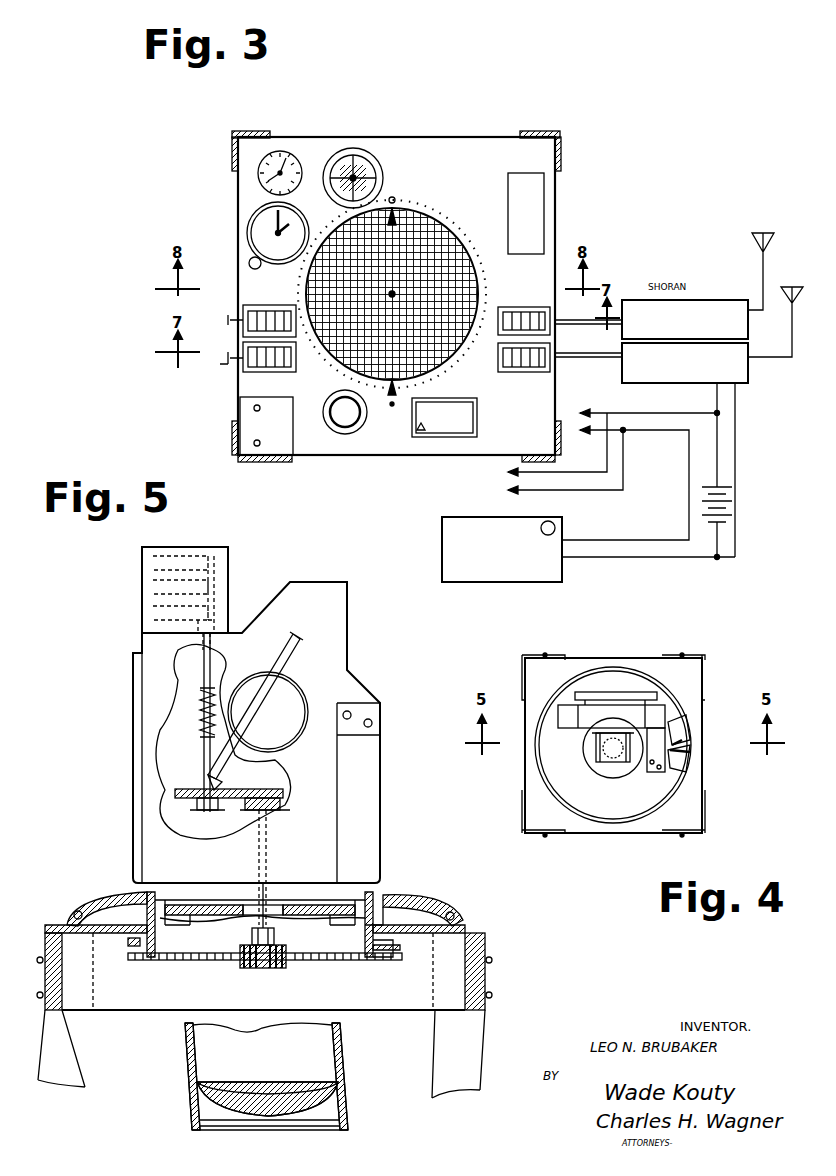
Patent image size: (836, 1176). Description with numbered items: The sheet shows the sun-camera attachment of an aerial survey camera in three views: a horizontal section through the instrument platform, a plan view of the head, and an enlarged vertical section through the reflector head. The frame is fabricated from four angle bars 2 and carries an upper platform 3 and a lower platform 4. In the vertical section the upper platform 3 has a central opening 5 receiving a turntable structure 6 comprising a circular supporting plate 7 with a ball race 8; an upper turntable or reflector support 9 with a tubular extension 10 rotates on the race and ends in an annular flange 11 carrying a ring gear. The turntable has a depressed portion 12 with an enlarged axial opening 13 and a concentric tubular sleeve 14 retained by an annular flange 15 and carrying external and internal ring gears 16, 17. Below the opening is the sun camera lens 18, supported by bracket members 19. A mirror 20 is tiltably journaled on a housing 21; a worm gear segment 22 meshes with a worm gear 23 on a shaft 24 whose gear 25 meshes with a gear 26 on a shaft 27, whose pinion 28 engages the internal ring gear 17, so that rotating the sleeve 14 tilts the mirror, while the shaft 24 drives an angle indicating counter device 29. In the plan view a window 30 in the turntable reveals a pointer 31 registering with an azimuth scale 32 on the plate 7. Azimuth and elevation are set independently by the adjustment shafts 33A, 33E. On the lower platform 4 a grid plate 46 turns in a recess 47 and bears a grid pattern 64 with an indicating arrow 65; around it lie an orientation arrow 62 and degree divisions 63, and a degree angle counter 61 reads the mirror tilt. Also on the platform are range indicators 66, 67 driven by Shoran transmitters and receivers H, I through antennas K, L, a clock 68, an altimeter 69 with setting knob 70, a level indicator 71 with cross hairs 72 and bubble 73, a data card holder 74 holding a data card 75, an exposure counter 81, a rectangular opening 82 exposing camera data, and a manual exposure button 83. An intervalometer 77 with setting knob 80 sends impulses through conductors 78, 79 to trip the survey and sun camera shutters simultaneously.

In FIG. 3, the angle bars 2 is at (248, 457).
In FIG. 4, the angle bars 2 is at (525, 672).
In FIG. 5, the angle bars 2 is at (465, 1032).
In FIG. 4, the upper supporting plate or platform 3 is at (685, 812).
In FIG. 5, the upper supporting plate or platform 3 is at (393, 937).
In FIG. 3, the lower supporting plate or platform 4 is at (292, 455).
In FIG. 5, the central opening 5 is at (135, 930).
In FIG. 4, the turntable structure 6 is at (680, 678).
In FIG. 5, the turntable structure 6 is at (482, 892).
In FIG. 5, the circular supporting plate 7 is at (465, 928).
In FIG. 5, the ball race 8 is at (462, 917).
In FIG. 4, the upper turntable or reflector support 9 is at (660, 782).
In FIG. 5, the upper turntable or reflector support 9 is at (380, 895).
In FIG. 5, the tubular extension 10 is at (373, 958).
In FIG. 5, the annular flange 11 is at (124, 939).
In FIG. 4, the centrally depressed portion 12 is at (618, 778).
In FIG. 5, the centrally depressed portion 12 is at (318, 870).
In FIG. 4, the enlarged axial opening 13 is at (598, 770).
In FIG. 5, the enlarged axial opening 13 is at (250, 905).
In FIG. 5, the tubular sleeve extension 14 is at (120, 896).
In FIG. 5, the annular flange 15 is at (338, 895).
In FIG. 5, the external ring gear 16 is at (398, 952).
In FIG. 5, the internal ring gear 17 is at (160, 962).
In FIG. 5, the sun camera lens or objective 18 is at (340, 1095).
In FIG. 5, the bracket members 19 is at (188, 1083).
In FIG. 4, the mirror 20 is at (596, 748).
In FIG. 5, the mirror 20 is at (292, 660).
In FIG. 4, the supporting plate or housing 21 is at (600, 715).
In FIG. 5, the supporting plate or housing 21 is at (318, 702).
In FIG. 5, the worm gear segment 22 is at (270, 650).
In FIG. 5, the worm gear 23 is at (198, 693).
In FIG. 5, the shaft 24 is at (204, 752).
In FIG. 5, the gear 25 is at (195, 790).
In FIG. 5, the gear 26 is at (265, 777).
In FIG. 5, the shaft 27 is at (259, 825).
In FIG. 5, the gear 28 is at (258, 968).
In FIG. 4, the angle indicating counter device 29 is at (660, 720).
In FIG. 5, the angle indicating counter device 29 is at (142, 592).
In FIG. 4, the window 30 is at (690, 765).
In FIG. 5, the window 30 is at (400, 905).
In FIG. 4, the pointer 31 is at (688, 738).
In FIG. 5, the pointer 31 is at (405, 910).
In FIG. 4, the azimuth angle indicating scale 32 is at (690, 728).
In FIG. 3, the azimuth adjustment shaft 33A is at (290, 290).
In FIG. 3, the elevation adjustment shaft 33E is at (298, 352).
In FIG. 3, the lower turntable or grid plate 46 is at (455, 350).
In FIG. 3, the opening or recess 47 is at (486, 268).
In FIG. 3, the degree angle counter 61 is at (250, 365).
In FIG. 3, the arrow or indicia 62 is at (398, 204).
In FIG. 3, the degree divisions 63 is at (452, 212).
In FIG. 3, the grid pattern 64 is at (435, 240).
In FIG. 3, the indicating mark or arrow 65 is at (413, 215).
In FIG. 3, the range distance indicator 66 is at (550, 312).
In FIG. 3, the range distance indicator 67 is at (550, 350).
In FIG. 3, the clock or chronometer 68 is at (258, 178).
In FIG. 3, the altimeter 69 is at (248, 228).
In FIG. 3, the setting knob 70 is at (250, 260).
In FIG. 3, the level indicator 71 is at (378, 180).
In FIG. 3, the cross hairs 72 is at (326, 165).
In FIG. 3, the bubble 73 is at (363, 170).
In FIG. 3, the data card holder 74 is at (477, 414).
In FIG. 3, the data card 75 is at (473, 433).
In FIG. 3, the intervalometer 77 is at (555, 574).
In FIG. 3, the circuit conductor 78 is at (650, 415).
In FIG. 3, the circuit conductor 79 is at (608, 485).
In FIG. 3, the setting knob 80 is at (556, 528).
In FIG. 3, the exposure counter 81 is at (248, 325).
In FIG. 3, the rectangular opening 82 is at (544, 192).
In FIG. 3, the manually operable exposure button 83 is at (360, 420).
In FIG. 3, the Loran or Shoran transmitter and receiver H is at (740, 326).
In FIG. 3, the Loran or Shoran transmitter and receiver I is at (742, 370).
In FIG. 3, the antenna K is at (758, 268).
In FIG. 3, the antenna L is at (790, 353).